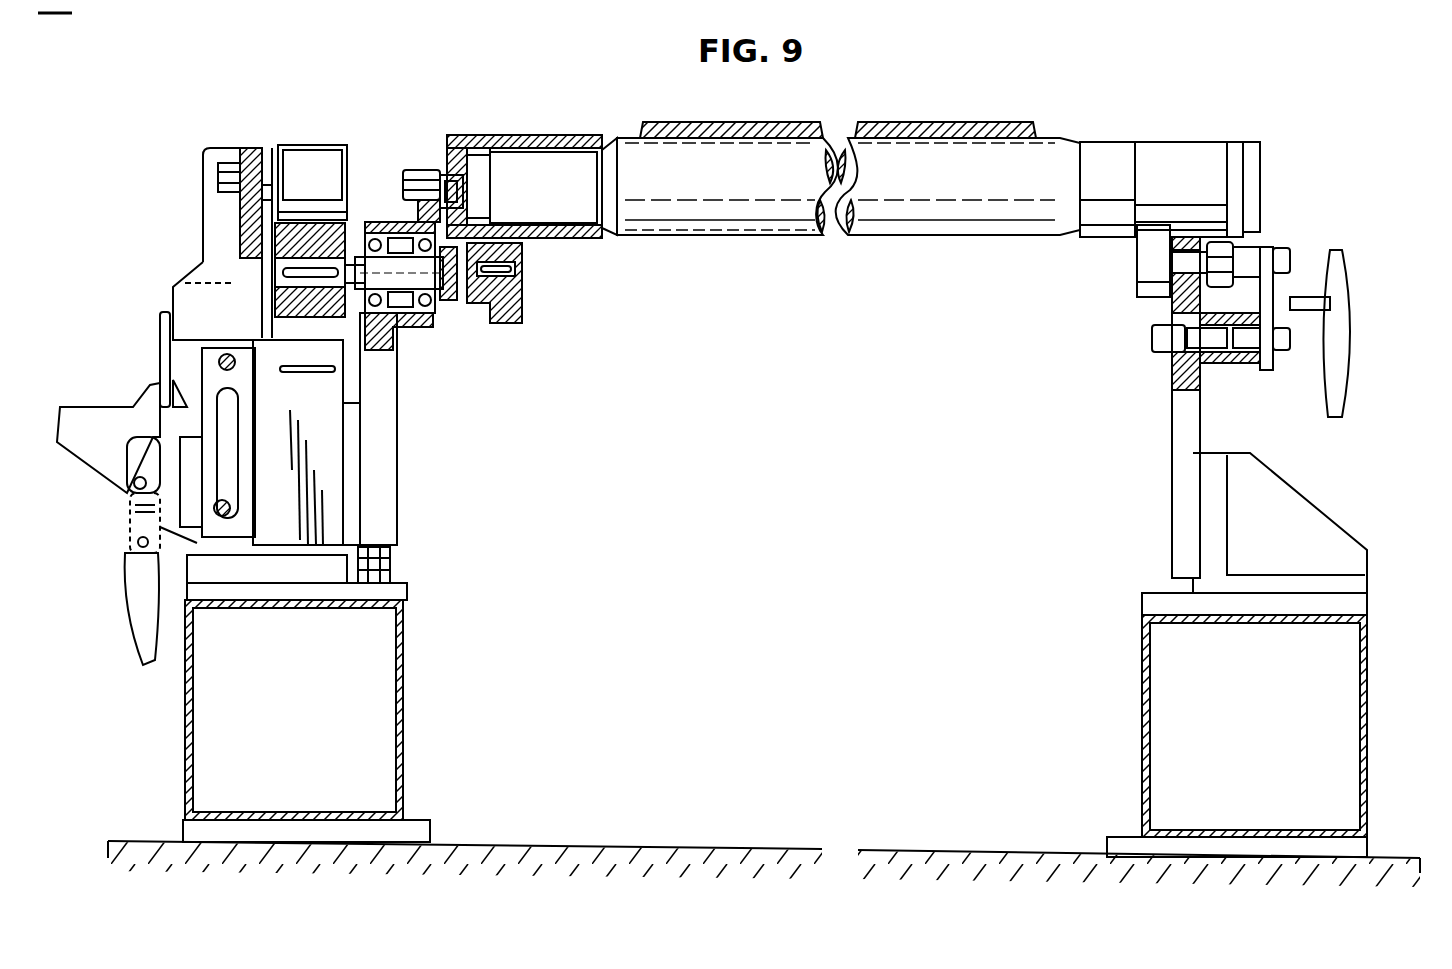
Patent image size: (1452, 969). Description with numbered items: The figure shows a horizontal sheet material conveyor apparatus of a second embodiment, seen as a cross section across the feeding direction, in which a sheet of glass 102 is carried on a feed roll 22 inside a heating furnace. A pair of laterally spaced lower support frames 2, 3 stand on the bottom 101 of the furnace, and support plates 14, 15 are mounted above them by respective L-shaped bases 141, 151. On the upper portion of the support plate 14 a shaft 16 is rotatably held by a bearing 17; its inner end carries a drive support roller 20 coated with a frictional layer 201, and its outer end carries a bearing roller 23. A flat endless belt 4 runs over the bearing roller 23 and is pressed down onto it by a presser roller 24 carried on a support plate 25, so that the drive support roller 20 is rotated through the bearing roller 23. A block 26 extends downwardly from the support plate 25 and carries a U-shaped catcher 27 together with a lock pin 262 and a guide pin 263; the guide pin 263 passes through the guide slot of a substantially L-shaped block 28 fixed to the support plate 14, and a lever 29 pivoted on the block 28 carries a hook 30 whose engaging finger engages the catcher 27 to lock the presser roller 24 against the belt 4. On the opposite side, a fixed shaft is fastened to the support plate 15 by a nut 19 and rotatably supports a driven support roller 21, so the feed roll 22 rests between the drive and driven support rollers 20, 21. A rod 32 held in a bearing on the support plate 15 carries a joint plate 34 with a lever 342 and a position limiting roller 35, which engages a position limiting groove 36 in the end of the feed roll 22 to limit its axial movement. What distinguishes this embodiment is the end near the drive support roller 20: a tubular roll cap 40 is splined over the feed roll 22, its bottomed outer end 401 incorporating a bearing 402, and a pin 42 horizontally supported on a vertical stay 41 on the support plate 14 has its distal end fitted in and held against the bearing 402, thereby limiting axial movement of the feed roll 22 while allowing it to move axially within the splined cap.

The lower support frame 2 is at (403, 683).
The lower support frame 3 is at (1370, 715).
The flat endless belt 4 is at (310, 373).
The support plate 14 is at (395, 472).
The support plate 15 is at (1180, 480).
The shaft 16 is at (393, 255).
The bearing 17 is at (447, 302).
The nut 19 is at (1222, 257).
The drive support roller 20 is at (497, 325).
The driven support roller 21 is at (1150, 262).
The feed roll 22 is at (772, 210).
The bearing roller 23 is at (300, 312).
The presser roller 24 is at (322, 148).
The support plate 25 is at (250, 145).
The block 26 is at (203, 195).
The U-shaped catcher 27 is at (160, 330).
The L-shaped block 28 is at (300, 512).
The lever 29 is at (145, 622).
The hook 30 is at (145, 400).
The rod 32 is at (1165, 333).
The joint plate 34 is at (1268, 315).
The position limiting roller 35 is at (1267, 265).
The position limiting groove 36 is at (1238, 152).
The tubular roll cap 40 is at (526, 135).
The vertical stay 41 is at (420, 170).
The pin 42 is at (468, 194).
The bottom 101 is at (690, 847).
The sheet of glass 102 is at (942, 123).
The L-shaped base 141 is at (330, 578).
The L-shaped base 151 is at (1265, 580).
The frictional layer 201 is at (522, 316).
The lock pin 262 is at (227, 357).
The guide pin 263 is at (222, 516).
The lever 342 is at (1348, 383).
The bottomed outer end 401 is at (448, 150).
The bearing 402 is at (495, 137).